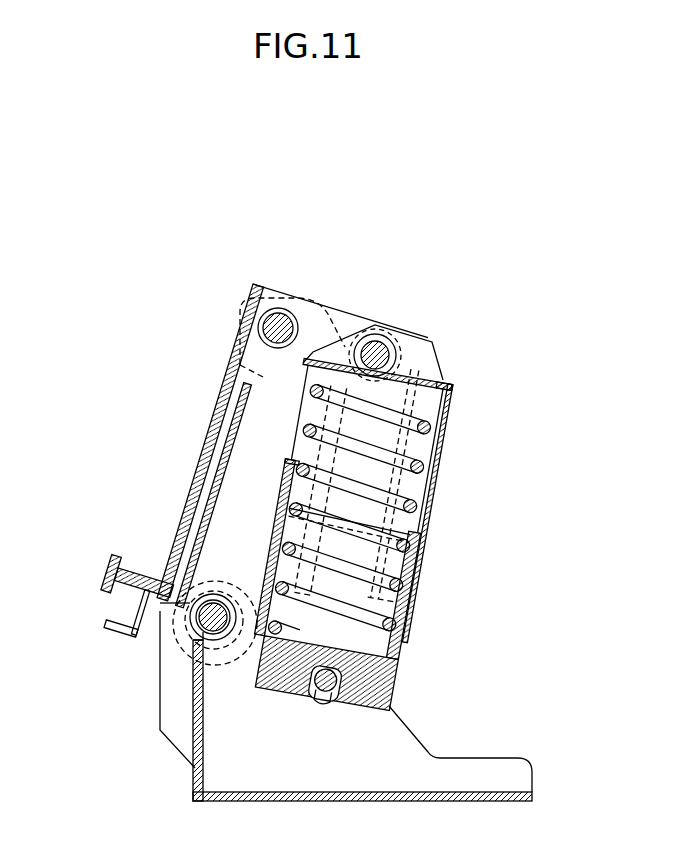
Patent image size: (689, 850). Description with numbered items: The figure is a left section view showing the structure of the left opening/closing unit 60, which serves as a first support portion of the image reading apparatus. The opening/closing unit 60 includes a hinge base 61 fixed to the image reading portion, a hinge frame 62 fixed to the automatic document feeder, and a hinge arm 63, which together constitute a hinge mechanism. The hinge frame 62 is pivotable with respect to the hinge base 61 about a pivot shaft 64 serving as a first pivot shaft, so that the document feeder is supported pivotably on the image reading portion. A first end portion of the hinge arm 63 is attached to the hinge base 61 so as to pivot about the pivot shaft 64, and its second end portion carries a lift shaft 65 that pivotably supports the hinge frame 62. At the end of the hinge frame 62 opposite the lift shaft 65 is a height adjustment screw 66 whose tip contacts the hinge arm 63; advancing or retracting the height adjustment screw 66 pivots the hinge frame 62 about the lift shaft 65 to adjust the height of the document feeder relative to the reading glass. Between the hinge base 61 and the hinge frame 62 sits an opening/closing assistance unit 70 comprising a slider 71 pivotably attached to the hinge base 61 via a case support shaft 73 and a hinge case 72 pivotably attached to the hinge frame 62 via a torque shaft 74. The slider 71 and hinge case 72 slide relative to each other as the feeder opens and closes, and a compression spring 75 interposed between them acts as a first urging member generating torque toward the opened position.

The left opening/closing unit 60 is at (455, 260).
The hinge base 61 is at (523, 769).
The hinge frame 62 is at (208, 404).
The hinge arm 63 is at (213, 493).
The pivot shaft 64 is at (198, 628).
The lift shaft 65 is at (292, 312).
The height adjustment screw 66 is at (105, 562).
The opening/closing assistance unit 70 is at (505, 420).
The slider 71 is at (398, 668).
The hinge case 72 is at (436, 372).
The case support shaft 73 is at (326, 692).
The torque shaft 74 is at (373, 342).
The compression spring 75 is at (400, 613).